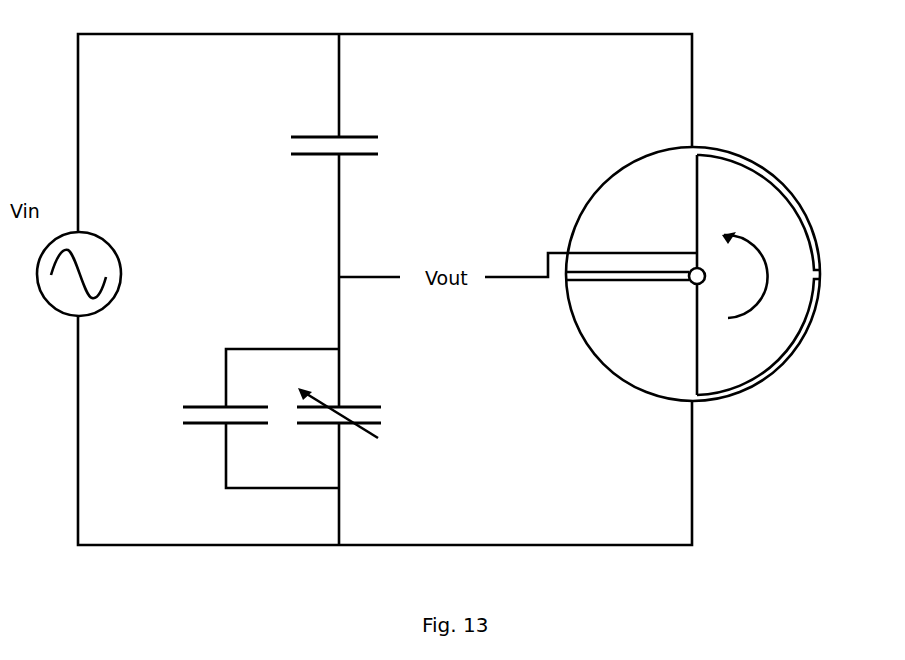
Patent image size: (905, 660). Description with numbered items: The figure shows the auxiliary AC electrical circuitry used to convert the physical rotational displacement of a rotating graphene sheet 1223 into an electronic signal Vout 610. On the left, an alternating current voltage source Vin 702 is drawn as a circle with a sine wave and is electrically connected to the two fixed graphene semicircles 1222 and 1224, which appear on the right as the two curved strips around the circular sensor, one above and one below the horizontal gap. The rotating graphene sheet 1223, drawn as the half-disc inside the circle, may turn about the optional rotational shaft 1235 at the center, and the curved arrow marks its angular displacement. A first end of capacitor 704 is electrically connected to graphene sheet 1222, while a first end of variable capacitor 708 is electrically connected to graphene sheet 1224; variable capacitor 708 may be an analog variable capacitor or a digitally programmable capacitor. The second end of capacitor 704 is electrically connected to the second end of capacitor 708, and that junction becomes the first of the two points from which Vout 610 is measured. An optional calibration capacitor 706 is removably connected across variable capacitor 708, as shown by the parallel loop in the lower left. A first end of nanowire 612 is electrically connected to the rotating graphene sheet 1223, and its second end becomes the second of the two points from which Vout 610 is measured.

The AC voltage Vin 702 is at (111, 244).
The capacitor 704 is at (310, 133).
The calibration capacitor 706 is at (183, 405).
The variable capacitor 708 is at (387, 425).
The electronic signal Vout 610 is at (416, 272).
The nanowire 612 is at (507, 283).
The graphene semicircle 1222 is at (760, 155).
The graphene semicircle 1223 is at (732, 275).
The graphene semicircle 1224 is at (757, 390).
The rotational shaft 1235 is at (692, 286).